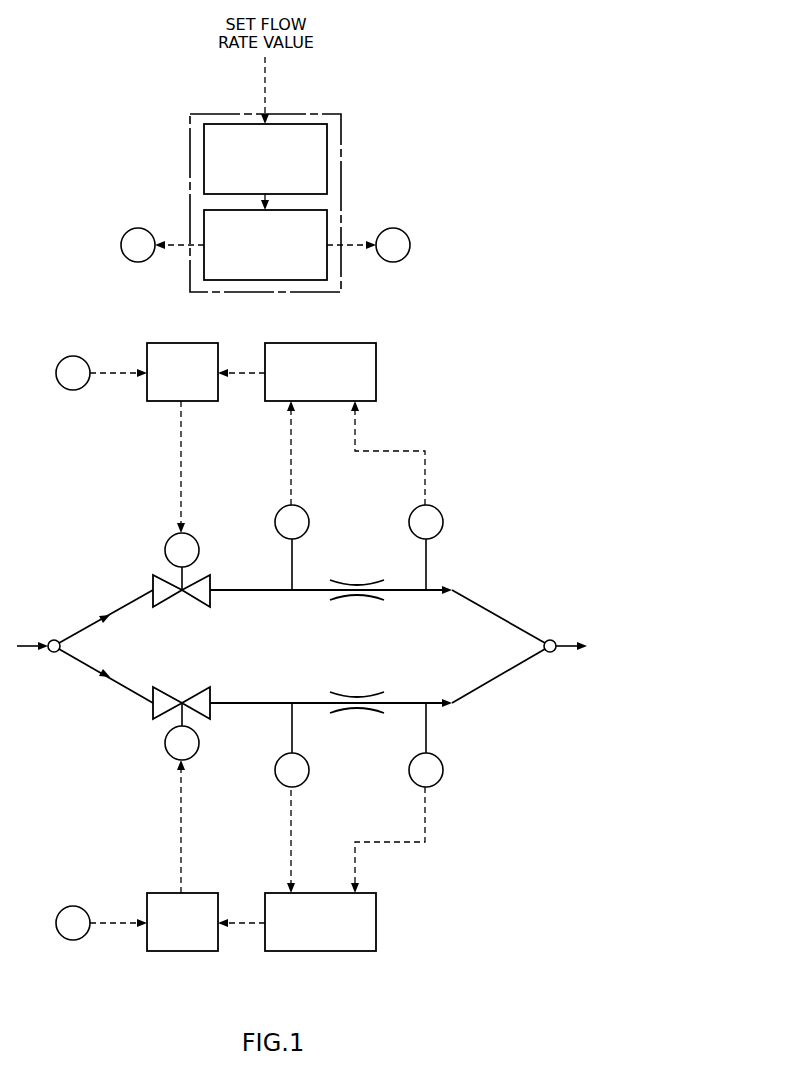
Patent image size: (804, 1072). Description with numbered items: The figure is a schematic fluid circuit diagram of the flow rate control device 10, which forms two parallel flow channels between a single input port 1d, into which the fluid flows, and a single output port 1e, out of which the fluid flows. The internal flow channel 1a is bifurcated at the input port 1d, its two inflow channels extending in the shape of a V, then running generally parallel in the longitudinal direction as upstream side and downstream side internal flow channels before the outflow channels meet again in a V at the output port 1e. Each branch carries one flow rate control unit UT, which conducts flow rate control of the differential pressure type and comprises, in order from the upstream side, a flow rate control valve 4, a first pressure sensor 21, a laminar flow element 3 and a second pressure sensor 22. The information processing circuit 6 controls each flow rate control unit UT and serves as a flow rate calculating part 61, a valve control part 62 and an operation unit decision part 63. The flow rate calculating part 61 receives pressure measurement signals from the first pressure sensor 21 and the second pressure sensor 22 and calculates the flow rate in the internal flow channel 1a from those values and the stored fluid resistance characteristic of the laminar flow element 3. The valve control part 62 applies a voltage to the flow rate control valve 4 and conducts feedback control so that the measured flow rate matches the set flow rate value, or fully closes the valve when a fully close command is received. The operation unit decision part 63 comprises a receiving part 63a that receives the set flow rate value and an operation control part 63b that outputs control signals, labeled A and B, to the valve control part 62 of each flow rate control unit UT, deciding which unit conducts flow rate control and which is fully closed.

The internal flow channel 1a is at (106, 581).
The input port 1d is at (53, 653).
The output port 1e is at (552, 653).
The laminar flow element 3 is at (366, 576).
The flow rate control valve 4 is at (168, 539).
The information processing circuit 6 is at (433, 217).
The flow rate control device 10 is at (104, 323).
The first pressure sensor 21 is at (275, 520).
The second pressure sensor 22 is at (441, 516).
The flow rate calculating part 61 is at (317, 343).
The valve control part 62 is at (180, 343).
The operation unit decision part 63 is at (190, 128).
The receiving part 63a is at (321, 125).
The operation control part 63b is at (321, 211).
The flow rate control unit UT is at (418, 378).